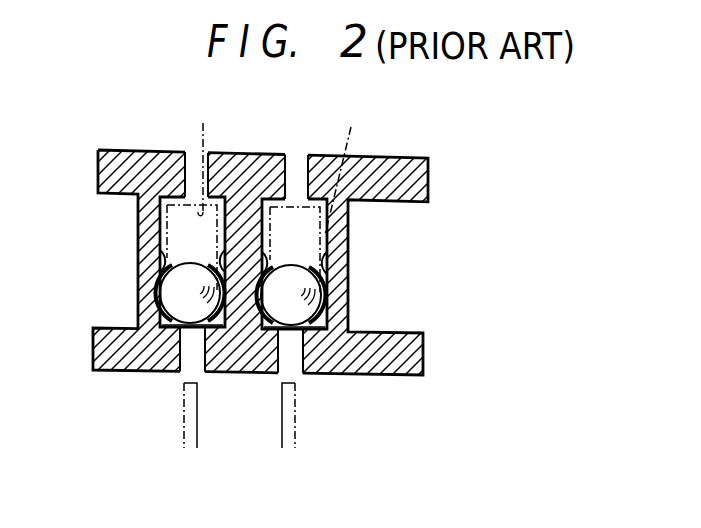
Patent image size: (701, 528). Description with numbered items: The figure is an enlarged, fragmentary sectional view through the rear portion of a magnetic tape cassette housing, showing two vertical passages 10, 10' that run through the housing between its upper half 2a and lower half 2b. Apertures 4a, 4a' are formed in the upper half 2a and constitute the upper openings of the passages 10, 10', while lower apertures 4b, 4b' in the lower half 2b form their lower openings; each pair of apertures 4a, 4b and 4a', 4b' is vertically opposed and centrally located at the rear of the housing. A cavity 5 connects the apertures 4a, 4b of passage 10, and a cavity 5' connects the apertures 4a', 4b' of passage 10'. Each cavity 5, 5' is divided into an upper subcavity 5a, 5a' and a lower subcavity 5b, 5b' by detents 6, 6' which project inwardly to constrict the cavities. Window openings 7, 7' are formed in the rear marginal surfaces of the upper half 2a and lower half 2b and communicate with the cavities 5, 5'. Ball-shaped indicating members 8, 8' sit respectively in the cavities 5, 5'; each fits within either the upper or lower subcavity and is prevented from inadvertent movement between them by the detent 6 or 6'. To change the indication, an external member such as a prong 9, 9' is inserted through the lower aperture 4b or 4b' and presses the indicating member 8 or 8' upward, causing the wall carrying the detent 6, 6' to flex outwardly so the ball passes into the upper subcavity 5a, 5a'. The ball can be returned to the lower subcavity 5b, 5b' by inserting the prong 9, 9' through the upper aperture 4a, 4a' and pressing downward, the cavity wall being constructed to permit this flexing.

The upper half 2a is at (410, 157).
The lower half 2b is at (414, 376).
The aperture 4a is at (168, 145).
The aperture 4a' is at (299, 147).
The lower aperture 4b is at (171, 379).
The lower aperture 4b' is at (315, 380).
The cavity 5 is at (131, 262).
The cavity 5' is at (376, 264).
The upper subcavity 5a is at (142, 247).
The upper subcavity 5a' is at (359, 249).
The lower subcavity 5b is at (145, 294).
The lower subcavity 5b' is at (356, 299).
The detent 6 is at (202, 347).
The detent 6' is at (287, 345).
The window opening 7 is at (206, 155).
The window opening 7' is at (348, 166).
The indicating member 8 is at (161, 348).
The indicating member 8' is at (317, 349).
The prong 9 is at (175, 437).
The prong 9' is at (305, 437).
The passage 10 is at (245, 110).
The passage 10' is at (366, 109).